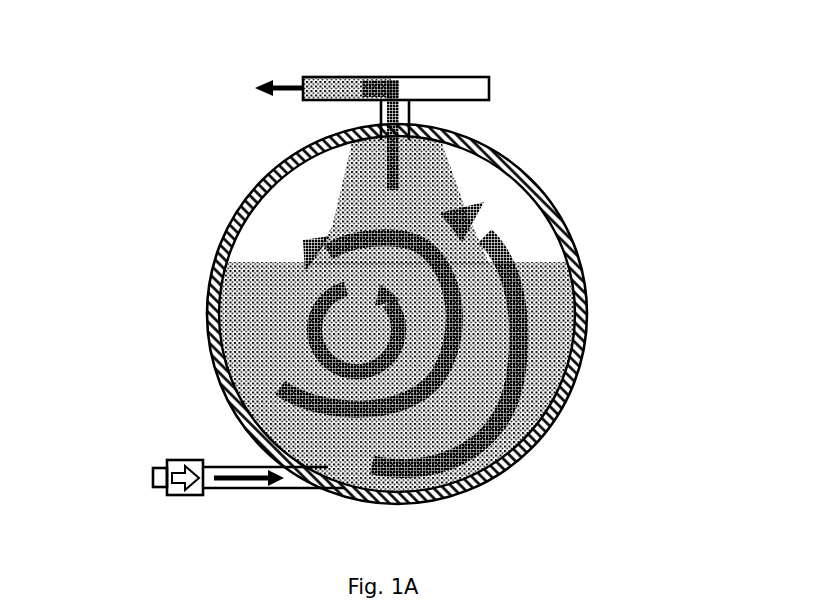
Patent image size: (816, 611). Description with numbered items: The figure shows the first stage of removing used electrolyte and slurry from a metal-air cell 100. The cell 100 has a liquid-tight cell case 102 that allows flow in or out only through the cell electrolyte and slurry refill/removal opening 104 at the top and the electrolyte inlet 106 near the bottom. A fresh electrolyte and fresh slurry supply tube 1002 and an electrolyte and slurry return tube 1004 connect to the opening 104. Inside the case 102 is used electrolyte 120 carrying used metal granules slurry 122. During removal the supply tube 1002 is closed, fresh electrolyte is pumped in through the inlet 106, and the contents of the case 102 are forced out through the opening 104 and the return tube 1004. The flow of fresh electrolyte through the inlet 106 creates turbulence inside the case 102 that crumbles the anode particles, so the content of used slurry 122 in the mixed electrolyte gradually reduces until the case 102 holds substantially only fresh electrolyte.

The metal-air cell 100 is at (628, 495).
The cell case 102 is at (471, 488).
The cell electrolyte and slurry refill/removal opening 104 is at (413, 116).
The electrolyte inlet 106 is at (322, 482).
The used electrolyte 120 is at (287, 238).
The used metal granules slurry 122 is at (343, 193).
The fresh electrolyte and fresh slurry supply tube 1002 is at (437, 88).
The electrolyte and slurry return tube 1004 is at (300, 77).